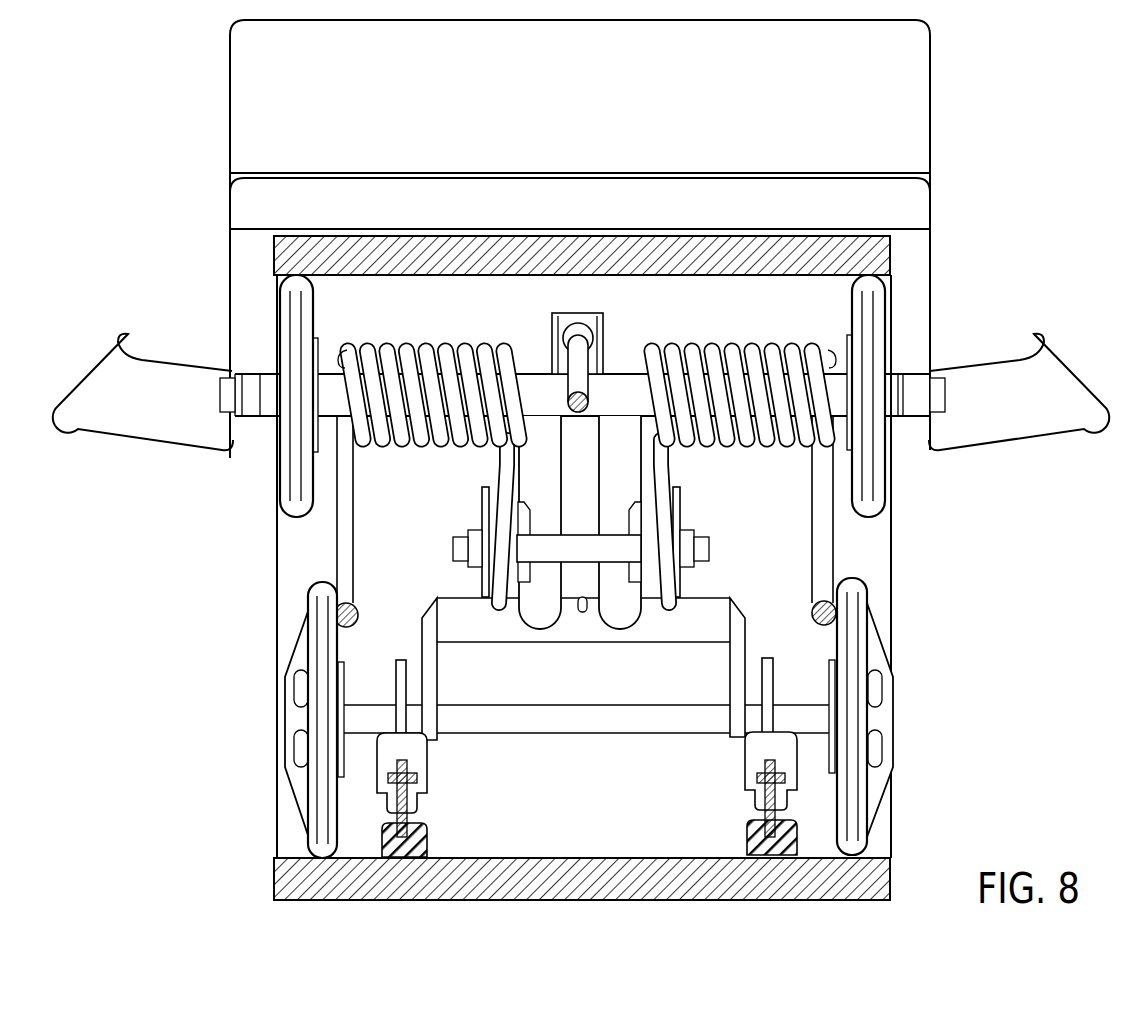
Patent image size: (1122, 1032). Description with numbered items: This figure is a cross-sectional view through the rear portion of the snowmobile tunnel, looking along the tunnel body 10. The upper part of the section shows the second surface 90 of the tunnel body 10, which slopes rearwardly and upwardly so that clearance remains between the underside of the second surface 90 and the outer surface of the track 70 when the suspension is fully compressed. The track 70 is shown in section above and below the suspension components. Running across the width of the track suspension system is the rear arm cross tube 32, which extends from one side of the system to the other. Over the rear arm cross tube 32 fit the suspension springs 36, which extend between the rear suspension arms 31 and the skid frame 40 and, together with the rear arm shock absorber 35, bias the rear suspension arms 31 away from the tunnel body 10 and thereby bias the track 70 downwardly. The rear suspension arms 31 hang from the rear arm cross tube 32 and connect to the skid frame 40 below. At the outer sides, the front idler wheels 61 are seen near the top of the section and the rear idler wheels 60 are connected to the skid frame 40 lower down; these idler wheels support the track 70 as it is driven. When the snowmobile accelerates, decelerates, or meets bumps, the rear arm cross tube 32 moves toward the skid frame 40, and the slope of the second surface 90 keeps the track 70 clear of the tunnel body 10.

The tunnel body 10 is at (930, 278).
The second surface 90 is at (536, 108).
The track 70 is at (630, 247).
The front idler wheels 61 is at (313, 318).
The rear idler wheels 60 is at (307, 610).
The rear arm cross tube 32 is at (536, 372).
The rear arm shock absorber 35 is at (584, 383).
The suspension spring 36 is at (433, 449).
The rear suspension arm 31 is at (541, 634).
The skid frame 40 is at (413, 813).